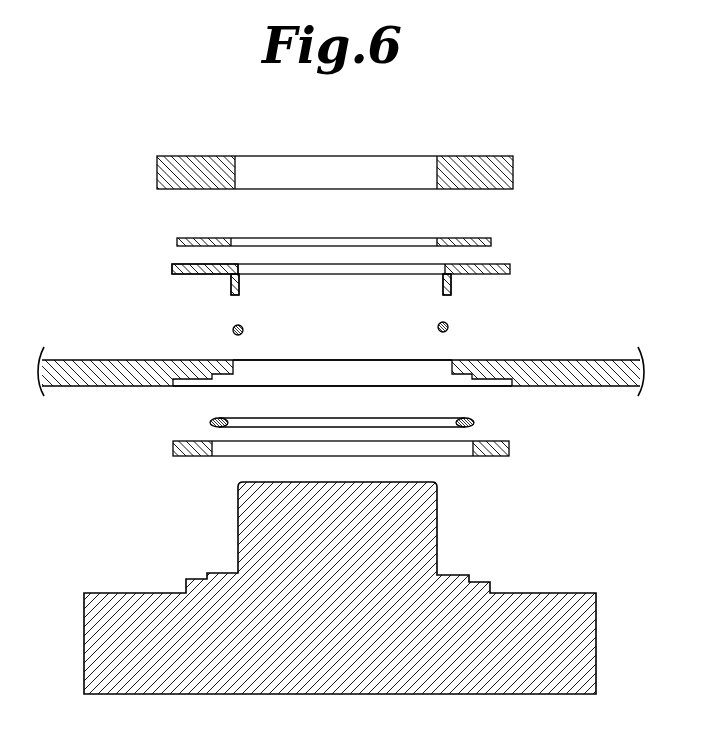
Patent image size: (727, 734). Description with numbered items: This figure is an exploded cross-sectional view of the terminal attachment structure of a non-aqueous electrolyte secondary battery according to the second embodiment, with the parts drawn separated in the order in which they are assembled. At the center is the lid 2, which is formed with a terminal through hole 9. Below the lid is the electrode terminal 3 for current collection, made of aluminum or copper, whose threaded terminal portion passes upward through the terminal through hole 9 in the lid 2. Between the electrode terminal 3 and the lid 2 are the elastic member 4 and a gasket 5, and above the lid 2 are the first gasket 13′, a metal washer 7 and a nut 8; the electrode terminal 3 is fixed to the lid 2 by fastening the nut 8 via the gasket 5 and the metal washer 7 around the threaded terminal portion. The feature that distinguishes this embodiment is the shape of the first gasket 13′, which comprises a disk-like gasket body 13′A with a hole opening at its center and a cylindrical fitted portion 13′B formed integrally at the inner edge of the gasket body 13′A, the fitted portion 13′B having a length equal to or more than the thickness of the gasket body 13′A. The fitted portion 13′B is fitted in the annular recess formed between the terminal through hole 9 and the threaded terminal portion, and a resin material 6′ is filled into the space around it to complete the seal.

The lid 2 is at (597, 363).
The electrode terminal 3 is at (598, 643).
The elastic member 4 is at (476, 422).
The gasket 5 is at (511, 447).
The resin material 6′ is at (244, 329).
The metal washer 7 is at (493, 241).
The nut 8 is at (516, 172).
The terminal through hole 9 is at (366, 368).
The first gasket 13′ is at (512, 270).
The gasket body 13′A is at (170, 268).
The fitted portion 13′B is at (230, 287).